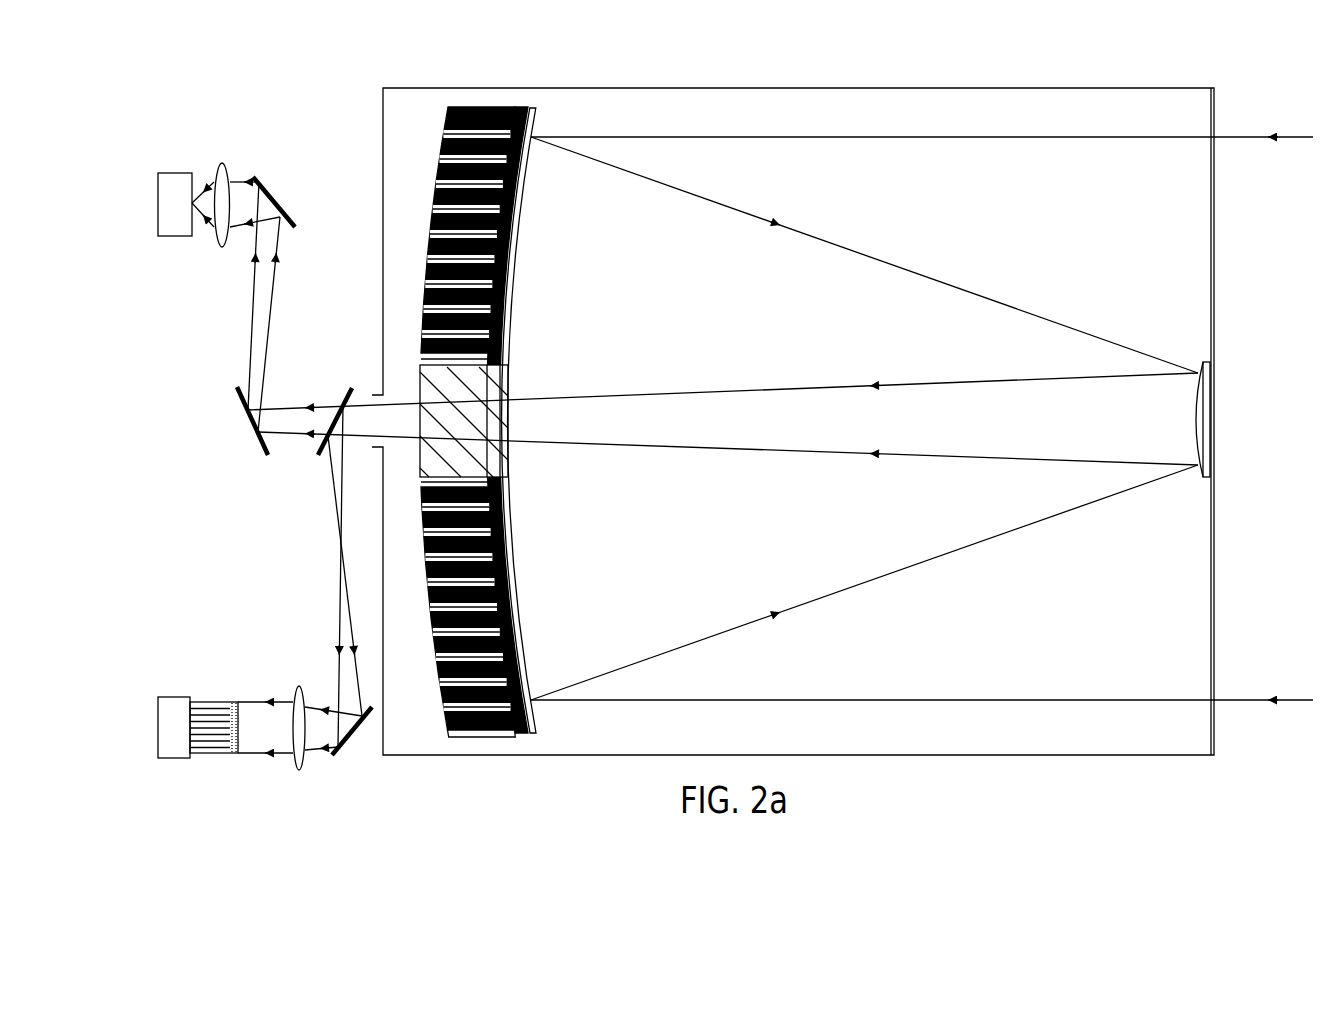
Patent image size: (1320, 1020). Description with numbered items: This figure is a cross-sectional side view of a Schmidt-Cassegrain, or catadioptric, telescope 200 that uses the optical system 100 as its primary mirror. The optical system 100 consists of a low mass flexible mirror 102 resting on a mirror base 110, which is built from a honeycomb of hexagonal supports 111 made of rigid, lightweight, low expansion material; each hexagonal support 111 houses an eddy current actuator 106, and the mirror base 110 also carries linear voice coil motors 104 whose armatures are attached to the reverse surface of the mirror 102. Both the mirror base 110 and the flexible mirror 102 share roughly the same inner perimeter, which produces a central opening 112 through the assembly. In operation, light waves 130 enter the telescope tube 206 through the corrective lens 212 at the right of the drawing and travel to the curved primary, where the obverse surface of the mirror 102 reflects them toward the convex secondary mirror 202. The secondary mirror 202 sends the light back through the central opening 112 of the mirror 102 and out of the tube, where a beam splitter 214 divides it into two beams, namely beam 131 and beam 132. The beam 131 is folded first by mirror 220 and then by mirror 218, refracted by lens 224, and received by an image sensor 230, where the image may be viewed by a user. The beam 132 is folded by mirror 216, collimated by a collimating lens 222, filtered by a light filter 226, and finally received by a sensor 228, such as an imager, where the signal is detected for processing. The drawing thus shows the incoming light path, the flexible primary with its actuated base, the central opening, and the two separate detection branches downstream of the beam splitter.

The optical system 100 is at (476, 419).
The flexible mirror 102 is at (535, 736).
The linear voice coil motors 104 is at (503, 737).
The eddy current actuator 106 is at (483, 108).
The mirror base 110 is at (440, 715).
The hexagonal supports 111 is at (474, 739).
The central opening 112 is at (477, 440).
The light waves 130 is at (1238, 137).
The beam 131 is at (275, 406).
The beam 132 is at (338, 530).
The Schmidt-Cassegrain telescope 200 is at (316, 88).
The convex secondary mirror 202 is at (1209, 420).
The telescope tube 206 is at (793, 88).
The corrective lens 212 is at (1216, 262).
The beam splitter 214 is at (348, 388).
The mirror 216 is at (356, 747).
The mirror 218 is at (282, 198).
The mirror 220 is at (245, 421).
The collimating lens 222 is at (300, 686).
The lens 224 is at (224, 163).
The light filter 226 is at (213, 701).
The sensor 228 is at (172, 697).
The image sensor 230 is at (178, 172).